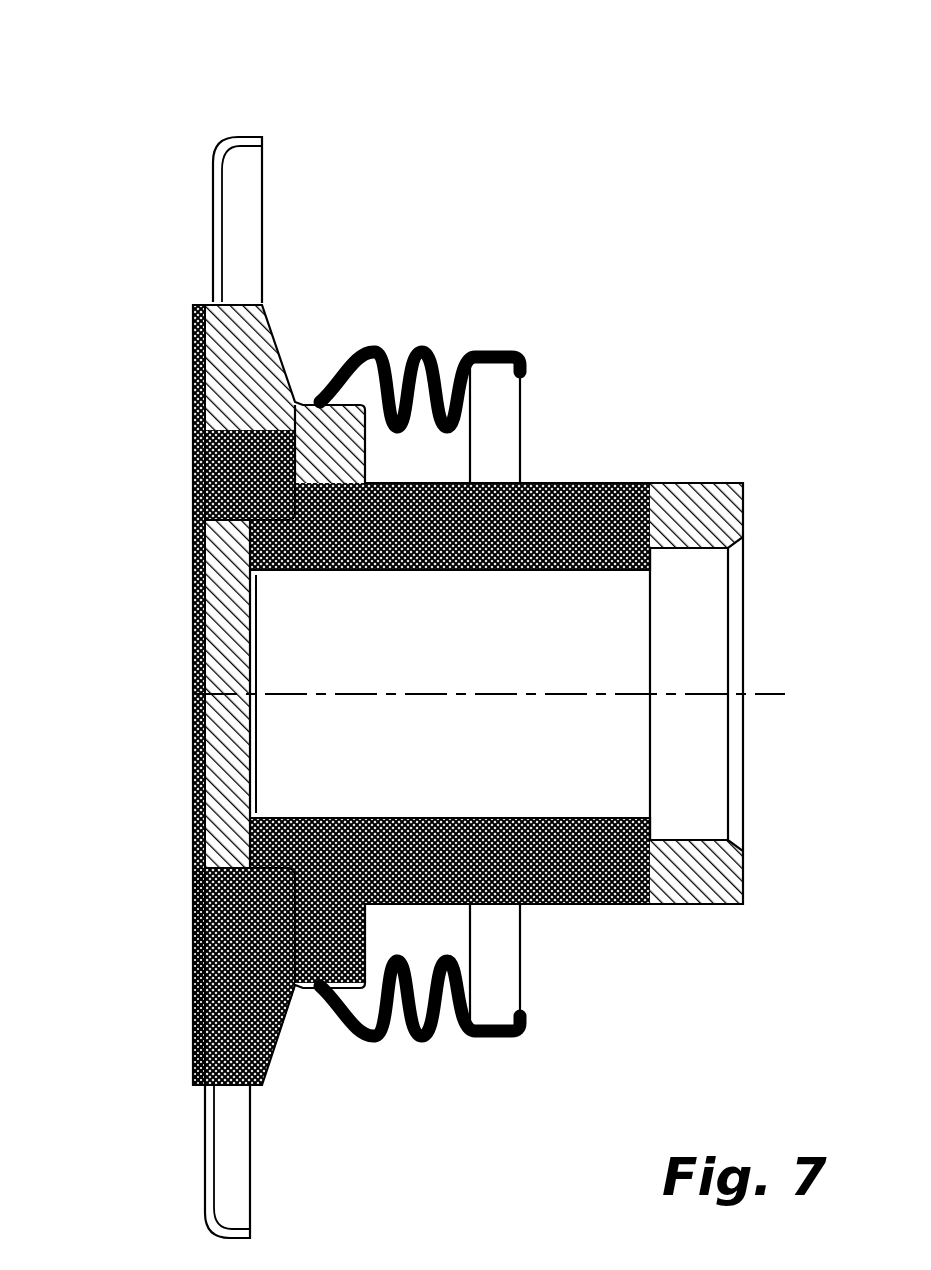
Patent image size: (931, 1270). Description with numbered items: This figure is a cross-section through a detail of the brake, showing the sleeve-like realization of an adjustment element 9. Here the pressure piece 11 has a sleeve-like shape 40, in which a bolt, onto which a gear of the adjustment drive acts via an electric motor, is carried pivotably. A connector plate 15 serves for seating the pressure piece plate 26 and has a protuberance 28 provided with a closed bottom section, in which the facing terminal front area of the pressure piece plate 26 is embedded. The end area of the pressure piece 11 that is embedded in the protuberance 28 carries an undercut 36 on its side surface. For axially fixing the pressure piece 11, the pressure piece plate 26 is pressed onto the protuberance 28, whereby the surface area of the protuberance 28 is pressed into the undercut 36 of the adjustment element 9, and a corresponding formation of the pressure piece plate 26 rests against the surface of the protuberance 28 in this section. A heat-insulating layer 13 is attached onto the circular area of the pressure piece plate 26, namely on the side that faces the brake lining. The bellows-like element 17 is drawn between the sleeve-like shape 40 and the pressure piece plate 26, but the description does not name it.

The adjustment element 9 is at (588, 236).
The pressure piece 11 is at (165, 226).
The heat-insulating layer 13 is at (193, 452).
The connector plate 15 is at (206, 160).
The bellows 17 is at (426, 345).
The pressure piece plate 26 is at (262, 322).
The protuberance 28 is at (193, 667).
The undercut 36 is at (193, 915).
The sleeve-like shape 40 is at (612, 522).